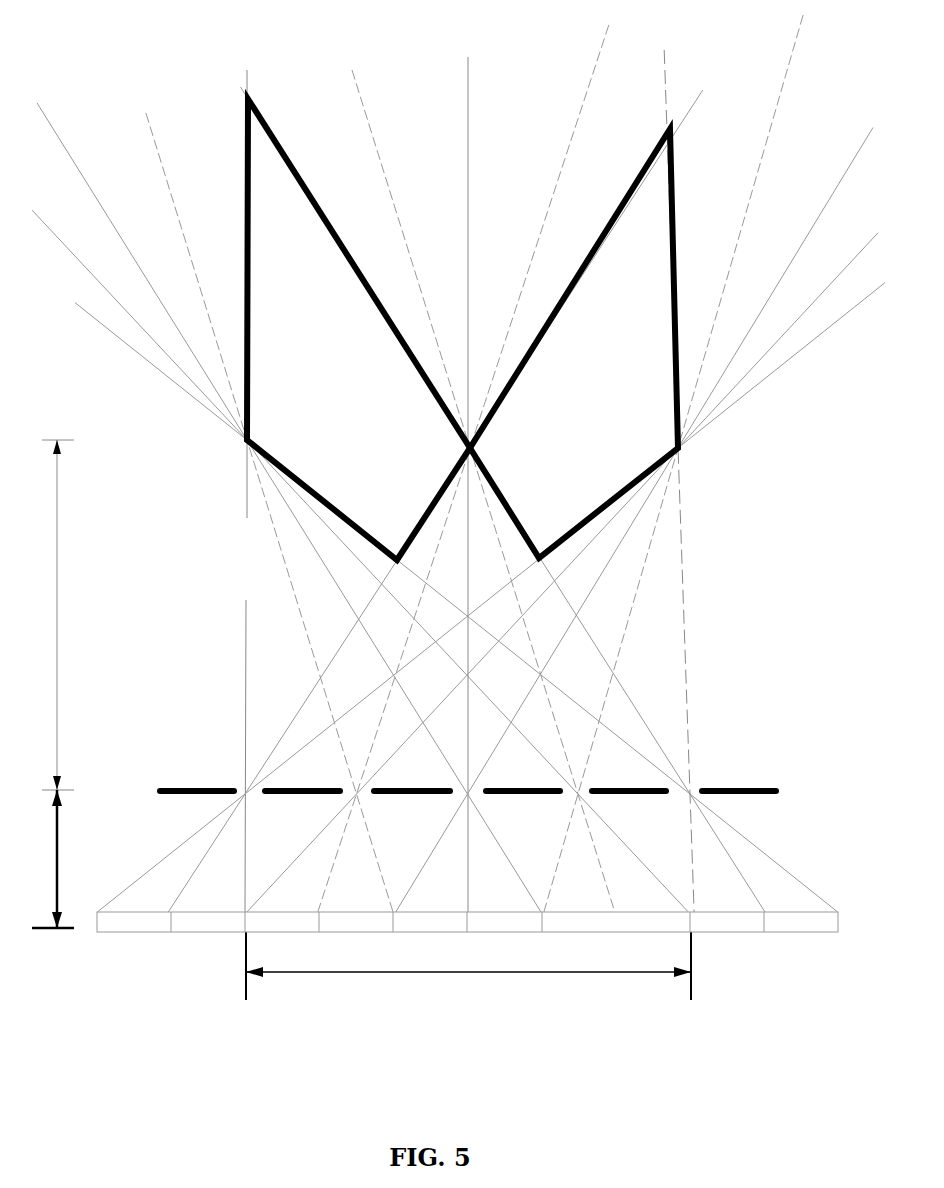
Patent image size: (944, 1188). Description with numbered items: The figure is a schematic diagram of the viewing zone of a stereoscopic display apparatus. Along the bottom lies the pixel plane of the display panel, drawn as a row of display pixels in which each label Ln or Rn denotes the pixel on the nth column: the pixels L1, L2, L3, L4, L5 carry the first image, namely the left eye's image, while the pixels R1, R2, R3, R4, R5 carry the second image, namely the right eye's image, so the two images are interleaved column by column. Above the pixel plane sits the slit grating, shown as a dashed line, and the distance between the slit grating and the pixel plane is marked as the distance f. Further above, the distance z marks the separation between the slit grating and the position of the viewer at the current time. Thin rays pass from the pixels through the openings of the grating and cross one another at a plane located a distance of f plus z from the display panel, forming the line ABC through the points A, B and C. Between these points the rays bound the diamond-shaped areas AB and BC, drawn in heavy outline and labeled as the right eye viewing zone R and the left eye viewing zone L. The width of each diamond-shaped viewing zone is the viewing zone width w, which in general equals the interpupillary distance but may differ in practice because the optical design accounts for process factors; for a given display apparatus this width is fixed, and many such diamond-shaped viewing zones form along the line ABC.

The right eye viewing zone R is at (358, 329).
The left eye viewing zone L is at (574, 343).
The viewing zone boundary point A is at (225, 431).
The viewing zone boundary point B is at (489, 430).
The viewing zone boundary point C is at (686, 451).
The viewer-to-grating distance z is at (60, 615).
The grating-to-pixel-plane distance f is at (56, 859).
The viewing zone width w is at (468, 964).
The first column left-image display pixel L1 is at (134, 922).
The first column right-image display pixel R1 is at (208, 922).
The second column left-image display pixel L2 is at (282, 922).
The second column right-image display pixel R2 is at (356, 922).
The third column left-image display pixel L3 is at (430, 922).
The third column right-image display pixel R3 is at (504, 922).
The fourth column left-image display pixel L4 is at (579, 922).
The fourth column right-image display pixel R4 is at (653, 922).
The fifth column left-image display pixel L5 is at (727, 922).
The fifth column right-image display pixel R5 is at (801, 922).